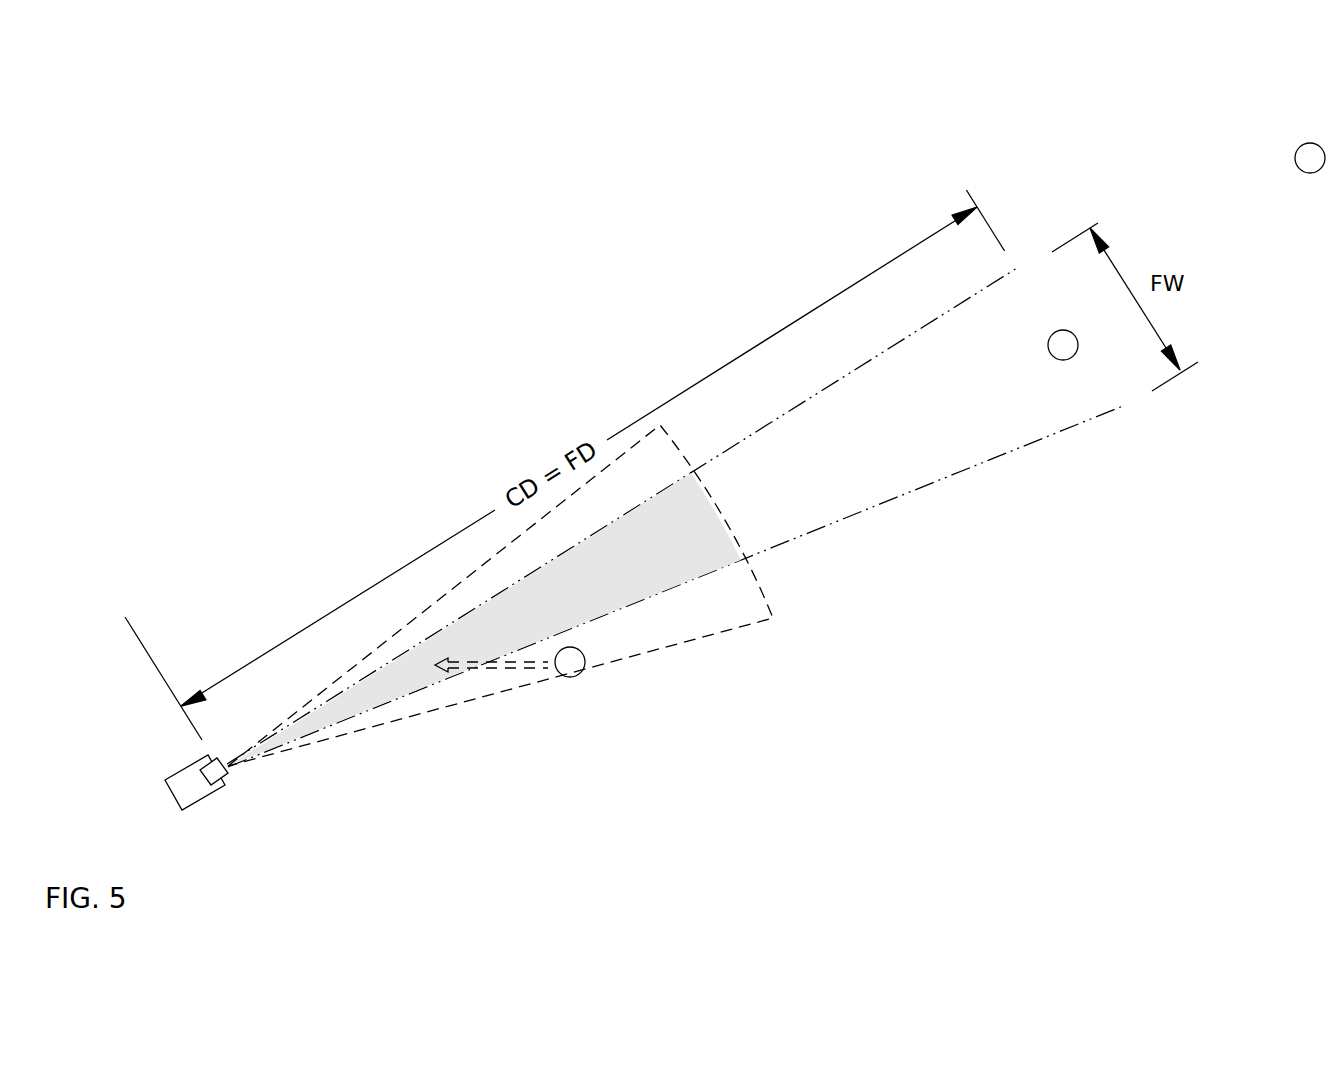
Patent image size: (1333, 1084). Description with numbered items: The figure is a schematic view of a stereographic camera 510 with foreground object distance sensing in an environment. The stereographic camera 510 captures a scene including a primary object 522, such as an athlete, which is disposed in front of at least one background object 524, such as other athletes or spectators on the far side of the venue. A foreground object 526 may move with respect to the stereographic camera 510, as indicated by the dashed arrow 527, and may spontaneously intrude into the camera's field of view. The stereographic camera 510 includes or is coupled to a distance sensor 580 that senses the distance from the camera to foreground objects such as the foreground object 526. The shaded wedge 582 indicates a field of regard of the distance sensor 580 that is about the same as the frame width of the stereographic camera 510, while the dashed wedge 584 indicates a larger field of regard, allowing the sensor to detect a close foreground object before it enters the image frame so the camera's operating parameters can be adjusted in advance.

The stereographic camera 510 is at (208, 793).
The distance sensor 580 is at (223, 777).
The shaded wedge 582 is at (560, 575).
The dashed wedge 584 is at (748, 623).
The primary object 522 is at (1063, 360).
The background object 524 is at (1297, 148).
The foreground object 526 is at (578, 675).
The dashed arrow 527 is at (522, 668).